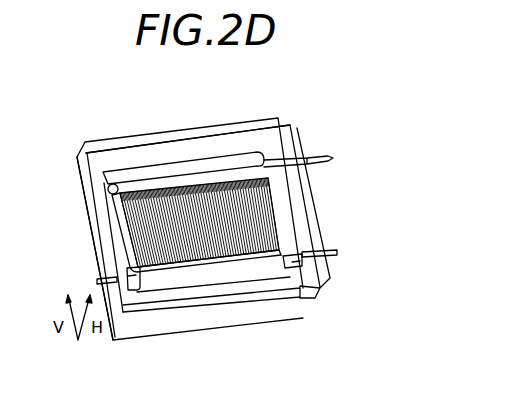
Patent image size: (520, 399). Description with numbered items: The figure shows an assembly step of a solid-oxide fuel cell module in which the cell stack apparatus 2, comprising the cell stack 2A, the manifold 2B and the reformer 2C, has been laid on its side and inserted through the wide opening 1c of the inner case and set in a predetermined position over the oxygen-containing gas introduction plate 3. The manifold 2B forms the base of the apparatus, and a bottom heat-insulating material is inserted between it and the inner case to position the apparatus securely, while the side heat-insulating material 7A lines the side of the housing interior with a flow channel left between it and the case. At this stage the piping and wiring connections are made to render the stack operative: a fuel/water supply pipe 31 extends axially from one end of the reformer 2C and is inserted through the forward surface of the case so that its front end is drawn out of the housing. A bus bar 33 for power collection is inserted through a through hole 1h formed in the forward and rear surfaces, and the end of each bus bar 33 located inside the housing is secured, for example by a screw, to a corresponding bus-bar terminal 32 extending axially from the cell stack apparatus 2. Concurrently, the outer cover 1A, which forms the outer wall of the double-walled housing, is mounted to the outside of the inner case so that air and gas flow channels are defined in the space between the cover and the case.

The outer cover 1A is at (315, 296).
The wide opening 1c is at (162, 152).
The through hole for bus-bar connection 1h is at (127, 282).
The cell stack apparatus 2 is at (115, 253).
The cell stack 2A is at (250, 225).
The manifold 2B is at (258, 248).
The reformer 2C is at (250, 135).
The oxygen-containing gas introduction plate 3 is at (207, 165).
The side heat-insulating material 7A is at (113, 248).
The fuel/water supply pipe 31 is at (333, 157).
The bus-bar terminal 32 is at (122, 283).
The bus bar 33 is at (97, 281).